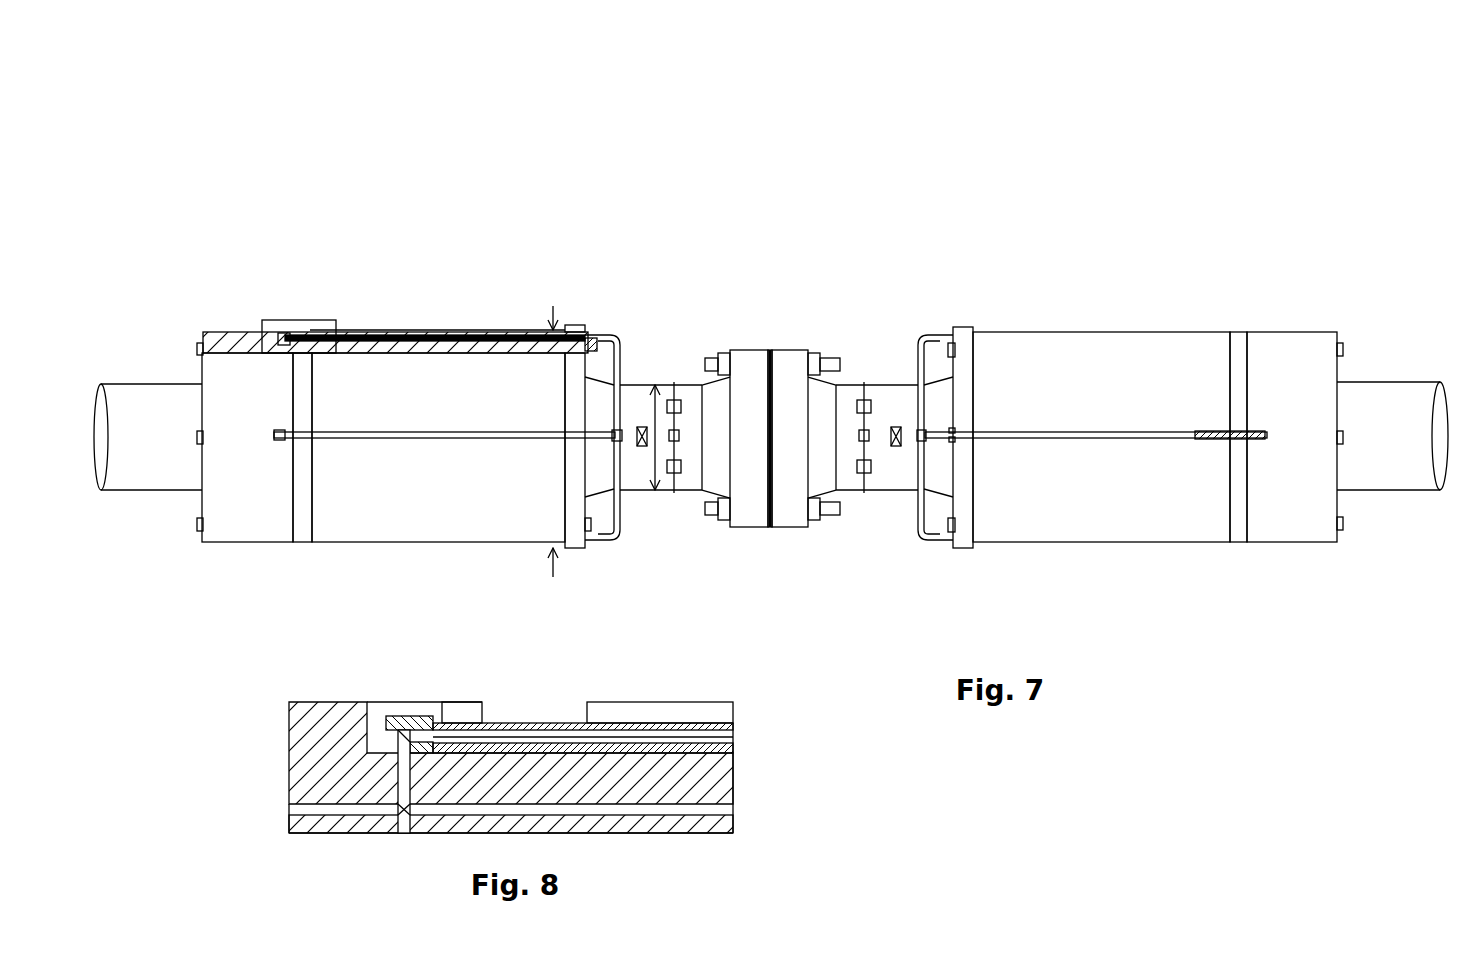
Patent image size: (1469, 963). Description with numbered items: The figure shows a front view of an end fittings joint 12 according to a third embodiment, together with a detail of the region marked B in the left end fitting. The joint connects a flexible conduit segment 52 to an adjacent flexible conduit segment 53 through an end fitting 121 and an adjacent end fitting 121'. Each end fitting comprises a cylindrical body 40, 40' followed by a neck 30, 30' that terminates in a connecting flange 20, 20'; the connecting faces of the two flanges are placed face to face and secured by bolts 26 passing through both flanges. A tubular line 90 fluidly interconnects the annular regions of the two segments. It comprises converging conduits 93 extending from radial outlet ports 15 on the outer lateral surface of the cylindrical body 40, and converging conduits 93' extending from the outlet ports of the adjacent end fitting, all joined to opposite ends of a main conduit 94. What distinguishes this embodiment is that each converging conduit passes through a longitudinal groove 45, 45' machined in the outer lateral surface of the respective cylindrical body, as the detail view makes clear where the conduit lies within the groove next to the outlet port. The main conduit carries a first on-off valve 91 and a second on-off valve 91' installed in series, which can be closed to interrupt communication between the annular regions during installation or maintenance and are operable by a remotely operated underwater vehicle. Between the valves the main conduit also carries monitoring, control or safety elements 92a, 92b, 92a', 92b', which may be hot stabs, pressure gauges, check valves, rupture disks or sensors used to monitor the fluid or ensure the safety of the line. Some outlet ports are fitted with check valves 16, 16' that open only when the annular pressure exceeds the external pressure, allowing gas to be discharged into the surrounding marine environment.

In FIG. 7, the end fittings joint 12 is at (778, 165).
In FIG. 8, the outlet port 15 is at (369, 743).
In FIG. 7, the check valve 16 is at (361, 419).
In FIG. 7, the check valve 16' is at (1186, 417).
In FIG. 7, the connecting flange 20 is at (754, 482).
In FIG. 7, the connecting flange 20' is at (804, 483).
In FIG. 7, the bolt 26 is at (710, 360).
In FIG. 7, the neck 30 is at (657, 468).
In FIG. 7, the neck 30' is at (880, 463).
In FIG. 7, the cylindrical body 40 is at (395, 421).
In FIG. 8, the cylindrical body 40 is at (511, 734).
In FIG. 7, the cylindrical body 40' is at (1145, 392).
In FIG. 7, the groove 45 is at (448, 348).
In FIG. 8, the groove 45 is at (660, 689).
In FIG. 7, the groove 45' is at (1092, 412).
In FIG. 7, the flexible conduit segment 52 is at (130, 478).
In FIG. 7, the flexible conduit segment 53 is at (1402, 475).
In FIG. 7, the tubular line 90 is at (755, 445).
In FIG. 7, the first on-off valve 91 is at (638, 381).
In FIG. 7, the second on-off valve 91' is at (896, 381).
In FIG. 7, the monitoring, control or safety element 92a is at (685, 398).
In FIG. 7, the monitoring, control or safety element 92a' is at (842, 388).
In FIG. 7, the monitoring, control or safety element 92b is at (645, 526).
In FIG. 7, the monitoring, control or safety element 92b' is at (853, 518).
In FIG. 7, the converging conduit 93 is at (609, 432).
In FIG. 8, the converging conduit 93 is at (583, 711).
In FIG. 7, the converging conduit 93' is at (927, 445).
In FIG. 7, the main conduit 94 is at (785, 430).
In FIG. 7, the end fitting 121 is at (438, 499).
In FIG. 7, the end fitting 121' is at (1101, 491).